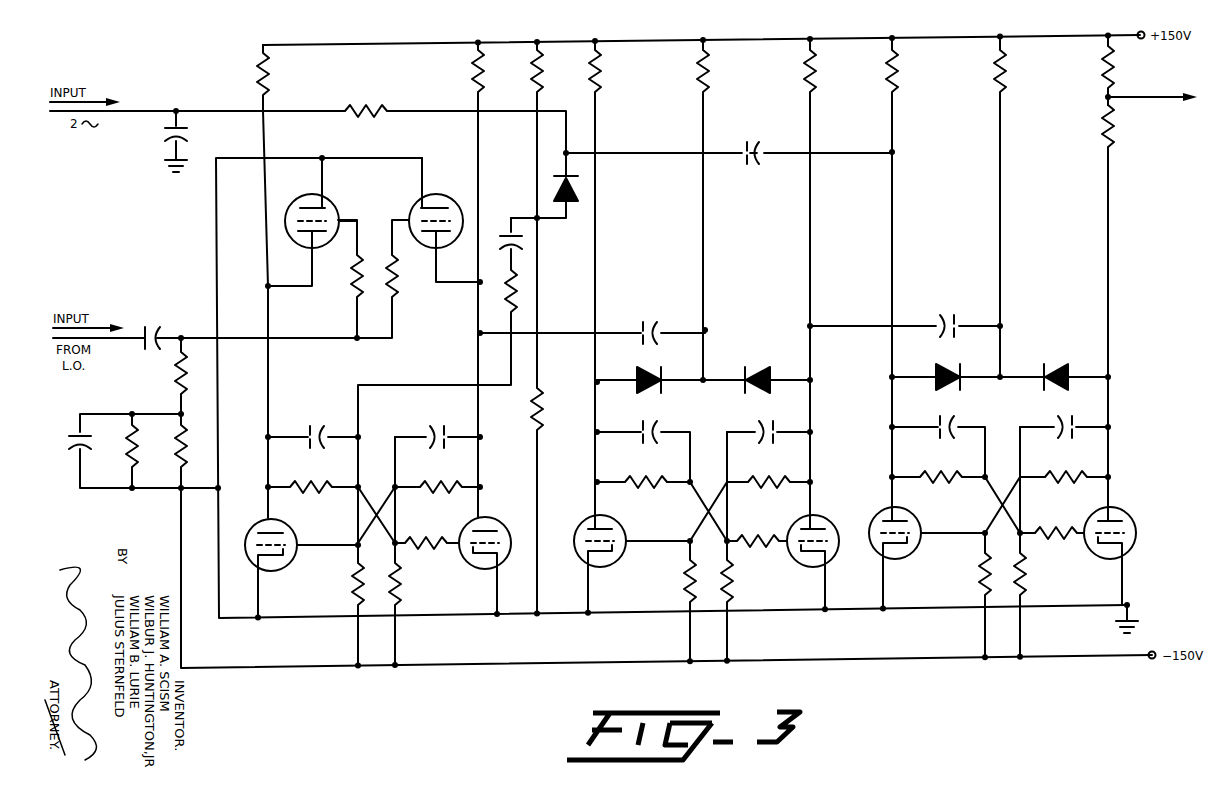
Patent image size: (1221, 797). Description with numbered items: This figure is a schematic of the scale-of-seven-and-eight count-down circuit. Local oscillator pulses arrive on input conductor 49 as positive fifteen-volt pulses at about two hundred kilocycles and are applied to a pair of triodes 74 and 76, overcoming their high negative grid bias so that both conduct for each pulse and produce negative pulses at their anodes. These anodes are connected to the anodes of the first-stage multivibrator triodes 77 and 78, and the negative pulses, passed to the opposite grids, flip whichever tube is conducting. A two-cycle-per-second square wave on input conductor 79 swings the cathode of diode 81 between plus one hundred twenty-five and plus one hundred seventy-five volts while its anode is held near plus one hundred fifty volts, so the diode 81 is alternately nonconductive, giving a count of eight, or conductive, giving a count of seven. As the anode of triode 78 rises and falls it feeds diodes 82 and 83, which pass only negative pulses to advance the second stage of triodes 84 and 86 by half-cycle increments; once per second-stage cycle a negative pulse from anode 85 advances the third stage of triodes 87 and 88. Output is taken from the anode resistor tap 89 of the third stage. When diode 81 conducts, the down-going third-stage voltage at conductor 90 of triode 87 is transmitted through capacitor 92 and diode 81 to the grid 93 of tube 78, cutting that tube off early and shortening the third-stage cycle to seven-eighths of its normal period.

The input conductor 49 is at (113, 338).
The triode 74 is at (322, 204).
The triode 76 is at (418, 204).
The multivibrator triode 77 is at (290, 530).
The multivibrator triode 78 is at (497, 522).
The input conductor 79 is at (152, 110).
The diode 81 is at (572, 200).
The diode 82 is at (658, 393).
The diode 83 is at (756, 393).
The triode 84 is at (620, 517).
The anode 85 is at (800, 519).
The triode 86 is at (826, 517).
The triode 87 is at (912, 510).
The triode 88 is at (1092, 511).
The anode resistor tap 89 is at (1139, 96).
The conductor 90 is at (892, 479).
The capacitor 92 is at (763, 162).
The grid 93 is at (462, 536).